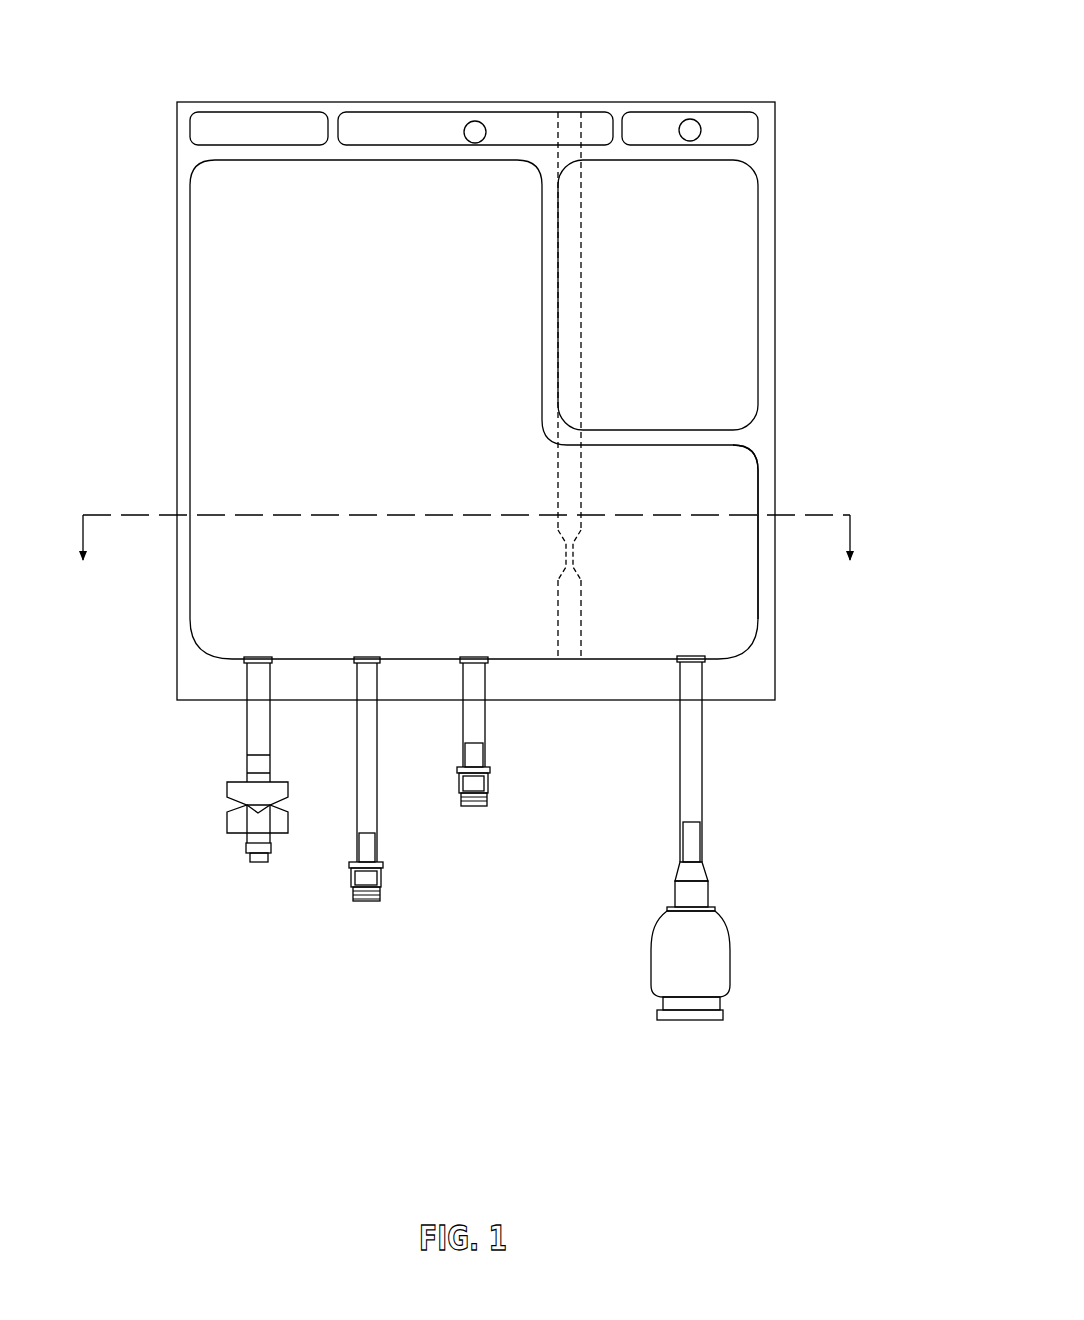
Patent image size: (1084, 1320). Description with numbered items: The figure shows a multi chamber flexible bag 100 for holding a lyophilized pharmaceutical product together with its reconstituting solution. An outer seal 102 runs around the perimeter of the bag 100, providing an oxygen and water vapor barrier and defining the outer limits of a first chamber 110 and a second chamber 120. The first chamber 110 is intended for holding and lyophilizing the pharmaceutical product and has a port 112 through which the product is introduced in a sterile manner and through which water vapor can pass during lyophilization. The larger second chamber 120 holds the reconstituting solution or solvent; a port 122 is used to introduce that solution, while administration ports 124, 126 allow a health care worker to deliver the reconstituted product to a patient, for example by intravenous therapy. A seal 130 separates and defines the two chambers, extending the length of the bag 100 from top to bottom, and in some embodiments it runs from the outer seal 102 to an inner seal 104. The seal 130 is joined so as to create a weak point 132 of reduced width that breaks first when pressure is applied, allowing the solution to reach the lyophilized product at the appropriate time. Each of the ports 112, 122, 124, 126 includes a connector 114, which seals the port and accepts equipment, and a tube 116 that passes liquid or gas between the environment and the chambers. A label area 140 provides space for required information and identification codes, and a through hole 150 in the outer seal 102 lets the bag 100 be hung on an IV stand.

The multi chamber flexible bag 100 is at (505, 510).
The outer seal 102 is at (215, 675).
The inner seal 104 is at (603, 441).
The first chamber 110 is at (723, 512).
The port 112 is at (750, 838).
The connector 114 is at (708, 972).
The tube 116 is at (690, 743).
The second chamber 120 is at (217, 408).
The port 122 is at (505, 769).
The administration port 124 is at (396, 846).
The administration port 126 is at (202, 803).
The seal 130 is at (567, 517).
The weak point 132 is at (568, 548).
The label area 140 is at (725, 335).
The through hole 150 is at (475, 121).